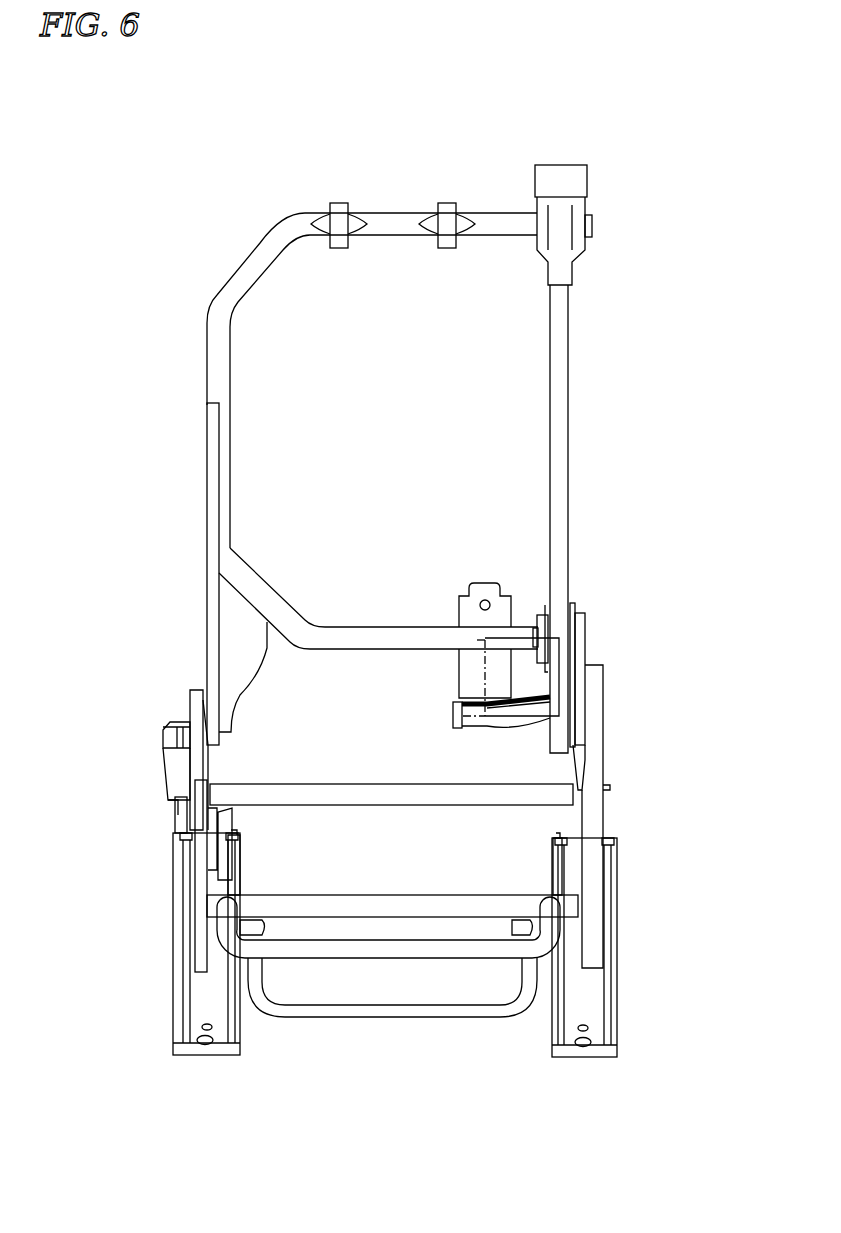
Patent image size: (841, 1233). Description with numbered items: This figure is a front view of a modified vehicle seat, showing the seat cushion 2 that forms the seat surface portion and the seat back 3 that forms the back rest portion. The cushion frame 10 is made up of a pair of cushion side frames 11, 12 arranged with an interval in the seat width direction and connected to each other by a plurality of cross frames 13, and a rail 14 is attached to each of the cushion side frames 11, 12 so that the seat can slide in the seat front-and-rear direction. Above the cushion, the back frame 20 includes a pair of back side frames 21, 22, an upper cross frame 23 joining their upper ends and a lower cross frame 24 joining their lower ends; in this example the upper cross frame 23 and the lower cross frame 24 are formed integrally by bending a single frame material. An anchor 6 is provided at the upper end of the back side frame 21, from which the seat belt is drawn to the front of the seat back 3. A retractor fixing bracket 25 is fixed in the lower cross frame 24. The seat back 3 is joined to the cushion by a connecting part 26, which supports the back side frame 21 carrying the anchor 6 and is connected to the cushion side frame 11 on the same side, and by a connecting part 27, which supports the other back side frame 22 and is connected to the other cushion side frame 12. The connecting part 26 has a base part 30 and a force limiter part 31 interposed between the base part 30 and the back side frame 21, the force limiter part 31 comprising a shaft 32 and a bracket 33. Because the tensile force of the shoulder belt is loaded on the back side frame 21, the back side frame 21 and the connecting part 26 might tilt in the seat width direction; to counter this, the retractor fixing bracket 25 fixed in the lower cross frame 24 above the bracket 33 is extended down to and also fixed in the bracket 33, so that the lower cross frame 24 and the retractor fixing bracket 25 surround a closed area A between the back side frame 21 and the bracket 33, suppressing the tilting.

The seat cushion 2 is at (336, 1030).
The seat back 3 is at (304, 203).
The anchor 6 is at (582, 173).
The cushion frame 10 is at (628, 965).
The cushion side frame 11 is at (600, 835).
The cushion side frame 12 is at (194, 840).
The cross frame 13 is at (345, 806).
The rail 14 is at (182, 1030).
The back frame 20 is at (611, 519).
The back side frame 21 is at (563, 424).
The back side frame 22 is at (206, 447).
The upper cross frame 23 is at (390, 210).
The lower cross frame 24 is at (360, 634).
The retractor fixing bracket 25 is at (484, 586).
The connecting part 26 is at (590, 605).
The connecting part 27 is at (187, 692).
The base part 30 is at (576, 636).
The force limiter part 31 is at (423, 731).
The shaft 32 is at (452, 712).
The bracket 33 is at (490, 733).
The closed area A is at (458, 662).